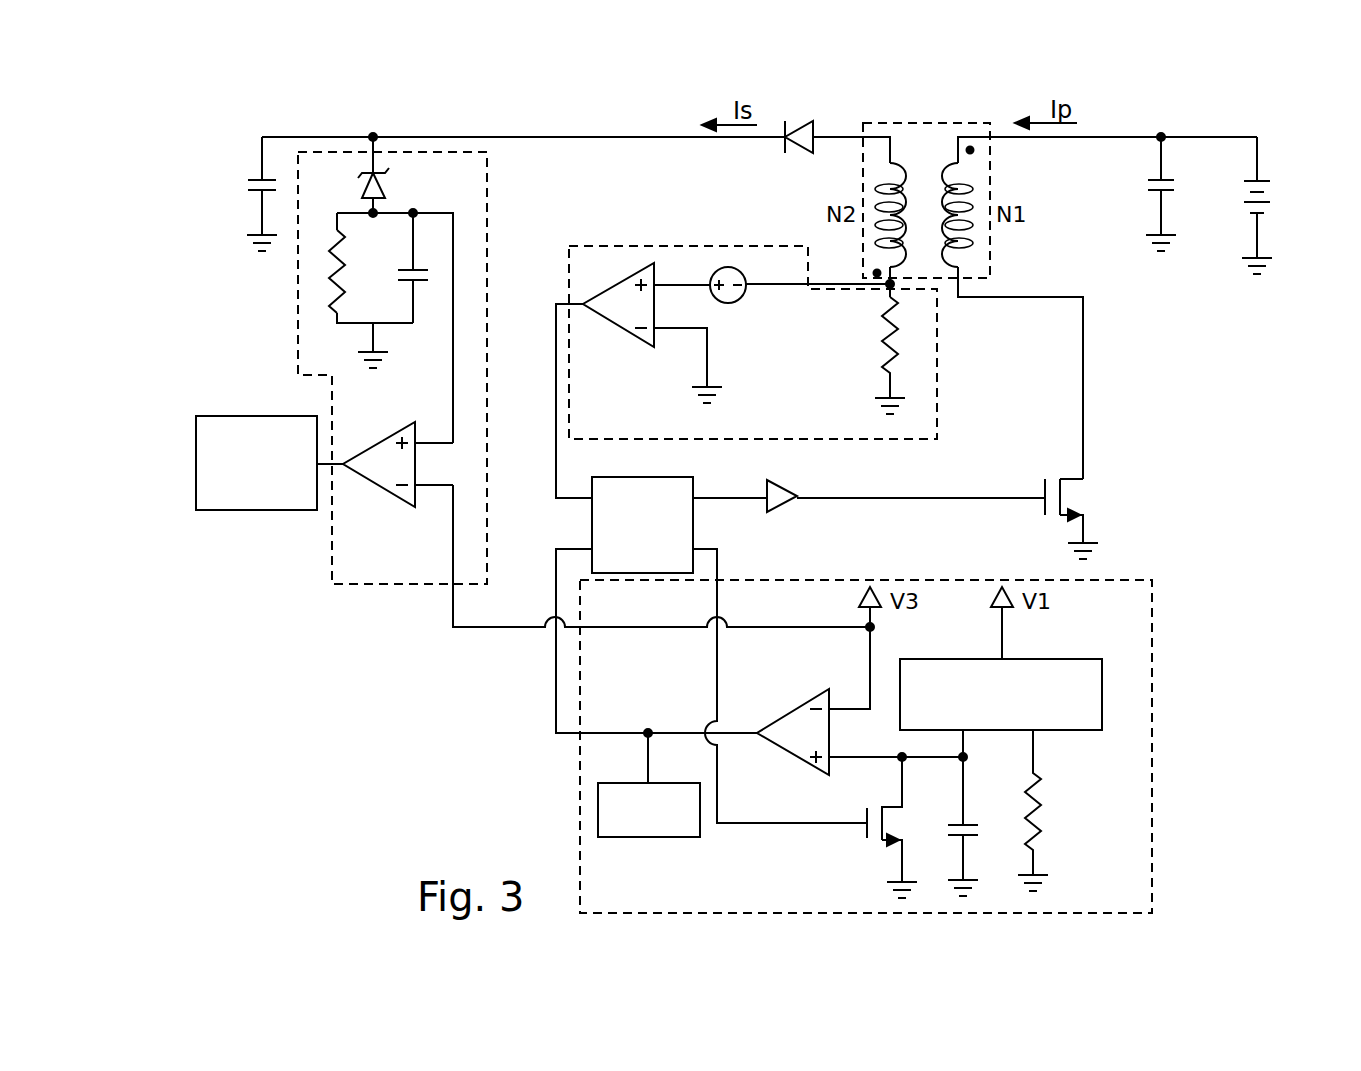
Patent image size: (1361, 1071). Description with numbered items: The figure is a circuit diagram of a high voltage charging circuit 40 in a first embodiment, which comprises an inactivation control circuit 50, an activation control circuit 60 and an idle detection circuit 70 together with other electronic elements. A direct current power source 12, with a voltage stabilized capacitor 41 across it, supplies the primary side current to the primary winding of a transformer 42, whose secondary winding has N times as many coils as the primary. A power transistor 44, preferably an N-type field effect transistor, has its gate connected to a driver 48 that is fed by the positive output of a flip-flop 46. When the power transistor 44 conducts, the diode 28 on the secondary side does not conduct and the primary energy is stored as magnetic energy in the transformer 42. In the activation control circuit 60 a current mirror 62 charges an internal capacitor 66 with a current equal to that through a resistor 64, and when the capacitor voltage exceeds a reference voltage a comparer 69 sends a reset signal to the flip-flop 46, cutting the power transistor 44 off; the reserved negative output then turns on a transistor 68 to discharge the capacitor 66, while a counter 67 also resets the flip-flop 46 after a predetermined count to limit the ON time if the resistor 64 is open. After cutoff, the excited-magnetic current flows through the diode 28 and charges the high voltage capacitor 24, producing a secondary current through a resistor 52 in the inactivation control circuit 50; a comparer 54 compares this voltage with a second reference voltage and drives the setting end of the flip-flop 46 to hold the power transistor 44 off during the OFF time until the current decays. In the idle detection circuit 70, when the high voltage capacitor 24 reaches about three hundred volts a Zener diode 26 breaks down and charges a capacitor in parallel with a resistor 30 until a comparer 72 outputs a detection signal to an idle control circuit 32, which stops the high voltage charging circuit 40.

The direct current power source 12 is at (1272, 205).
The high voltage capacitor 24 is at (252, 182).
The Zener diode 26 is at (388, 187).
The diode 28 is at (425, 263).
The resistor 30 is at (322, 283).
The idle control circuit 32 is at (255, 512).
The high voltage charging circuit 40 is at (1303, 128).
The capacitor 41 is at (1172, 200).
The transformer 42 is at (928, 145).
The power transistor 44 is at (1085, 500).
The flip-flop 46 is at (695, 486).
The driver 48 is at (795, 486).
The inactivation control circuit 50 is at (937, 373).
The resistor 52 is at (880, 338).
The comparer 54 is at (628, 277).
The activation control circuit 60 is at (1152, 667).
The current mirror 62 is at (1080, 732).
The resistor 64 is at (1048, 830).
The capacitor 66 is at (968, 838).
The counter 67 is at (700, 838).
The transistor 68 is at (870, 848).
The comparer 69 is at (797, 702).
The idle detection circuit 70 is at (333, 586).
The comparer 72 is at (388, 490).